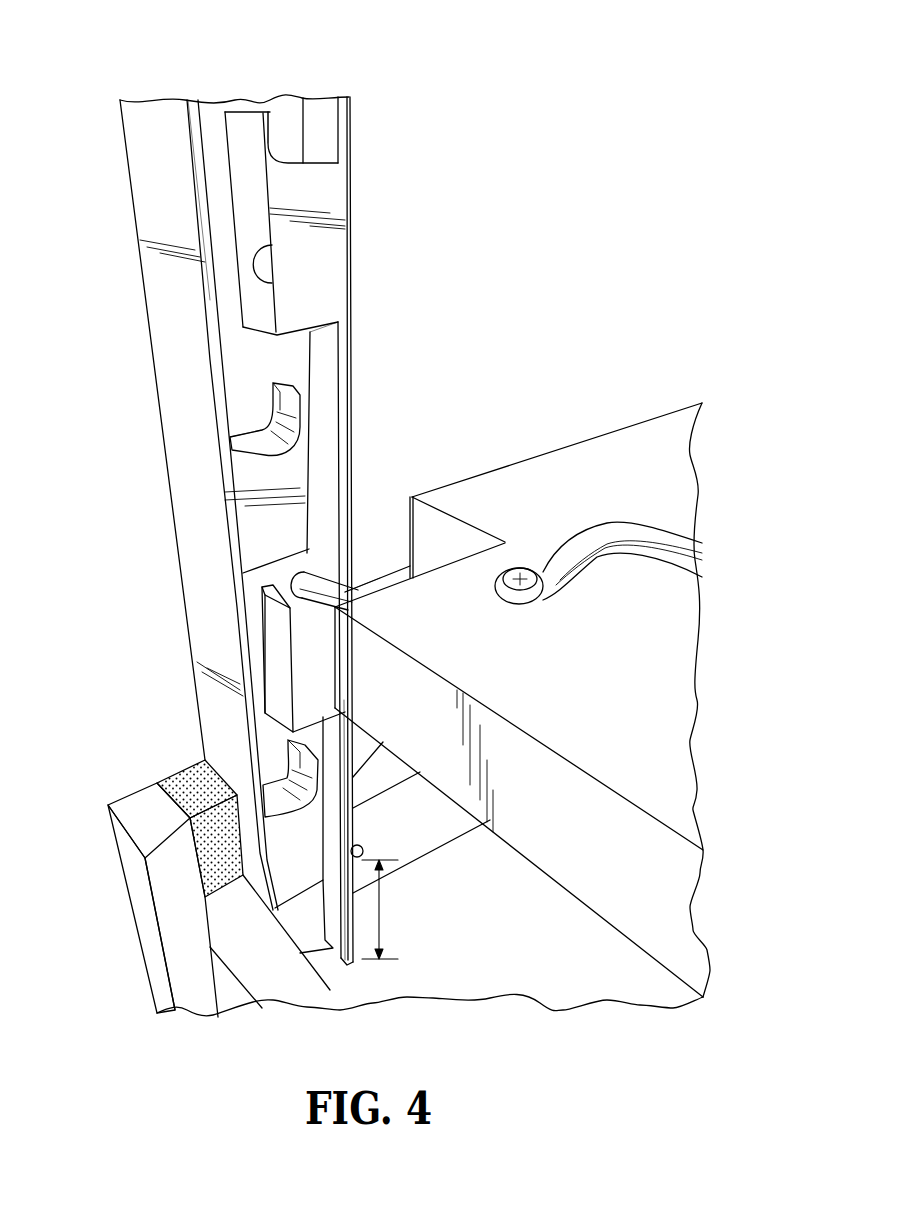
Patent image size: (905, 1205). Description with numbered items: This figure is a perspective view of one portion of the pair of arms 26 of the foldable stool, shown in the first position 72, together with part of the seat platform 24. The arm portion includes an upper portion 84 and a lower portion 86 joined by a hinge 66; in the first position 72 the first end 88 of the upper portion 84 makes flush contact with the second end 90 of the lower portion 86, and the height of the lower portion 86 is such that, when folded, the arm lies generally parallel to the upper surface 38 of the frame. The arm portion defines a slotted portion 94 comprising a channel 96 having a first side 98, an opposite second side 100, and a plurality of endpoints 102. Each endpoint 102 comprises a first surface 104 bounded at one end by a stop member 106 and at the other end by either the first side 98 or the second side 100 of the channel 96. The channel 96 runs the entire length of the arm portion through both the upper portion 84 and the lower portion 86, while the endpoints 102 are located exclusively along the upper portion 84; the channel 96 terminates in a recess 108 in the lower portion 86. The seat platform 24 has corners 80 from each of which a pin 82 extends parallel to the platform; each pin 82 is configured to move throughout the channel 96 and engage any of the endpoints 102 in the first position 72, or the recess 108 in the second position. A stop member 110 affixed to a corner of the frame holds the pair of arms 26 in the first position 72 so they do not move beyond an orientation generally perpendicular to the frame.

The seat platform 24 is at (706, 461).
The pair of arms 26 is at (428, 218).
The upper surface 38 is at (551, 955).
The hinge 66 is at (363, 848).
The first position 72 is at (587, 137).
The corners 80 is at (367, 598).
The pin 82 is at (318, 573).
The upper portion 84 is at (200, 625).
The lower portion 86 is at (283, 943).
The first end 88 is at (302, 912).
The second end 90 is at (304, 916).
The slotted portion 94 is at (298, 353).
The channel 96 is at (212, 108).
The first side 98 is at (228, 287).
The second side 100 is at (274, 285).
The endpoints 102 is at (298, 152).
The first surface 104 is at (268, 450).
The stop member 106 is at (267, 133).
The recess 108 is at (312, 950).
The stop members 110 is at (123, 873).